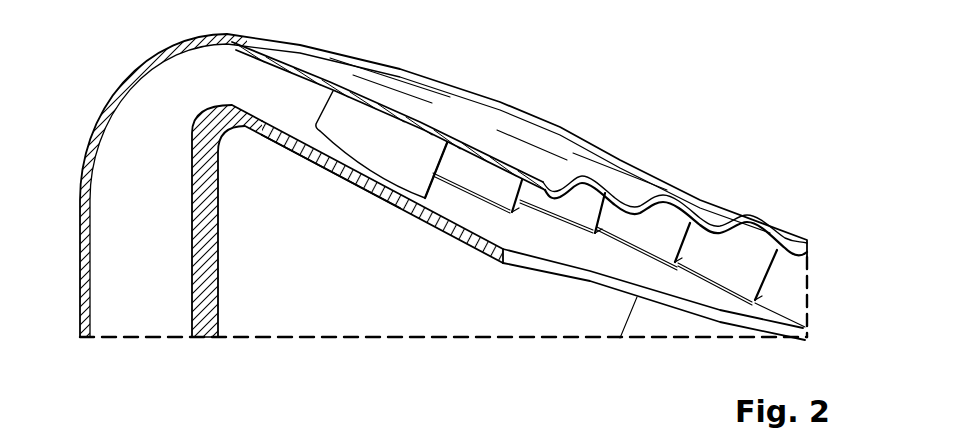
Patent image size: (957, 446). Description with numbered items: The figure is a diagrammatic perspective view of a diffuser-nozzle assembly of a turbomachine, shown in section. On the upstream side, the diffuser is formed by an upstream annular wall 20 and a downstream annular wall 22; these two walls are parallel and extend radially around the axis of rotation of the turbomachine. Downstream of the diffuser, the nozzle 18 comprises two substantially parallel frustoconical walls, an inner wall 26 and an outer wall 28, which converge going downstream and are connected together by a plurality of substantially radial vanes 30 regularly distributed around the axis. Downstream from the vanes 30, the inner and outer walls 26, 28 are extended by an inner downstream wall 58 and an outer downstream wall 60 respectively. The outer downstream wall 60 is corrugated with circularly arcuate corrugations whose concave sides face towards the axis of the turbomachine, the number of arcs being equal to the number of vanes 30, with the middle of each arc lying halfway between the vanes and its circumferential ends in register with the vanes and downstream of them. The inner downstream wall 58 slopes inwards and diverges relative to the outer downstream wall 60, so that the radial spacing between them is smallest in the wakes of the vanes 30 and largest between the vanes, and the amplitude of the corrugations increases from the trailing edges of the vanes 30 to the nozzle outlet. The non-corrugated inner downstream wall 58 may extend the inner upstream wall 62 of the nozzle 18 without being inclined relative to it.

The nozzle 18 is at (428, 250).
The upstream annular wall 20 is at (88, 281).
The downstream annular wall 22 is at (218, 270).
The inner wall 26 is at (400, 204).
The outer wall 28 is at (453, 131).
The radial vanes 30 is at (377, 137).
The inner downstream wall 58 is at (472, 244).
The outer downstream wall 60 is at (523, 172).
The inner upstream wall 62 is at (273, 143).